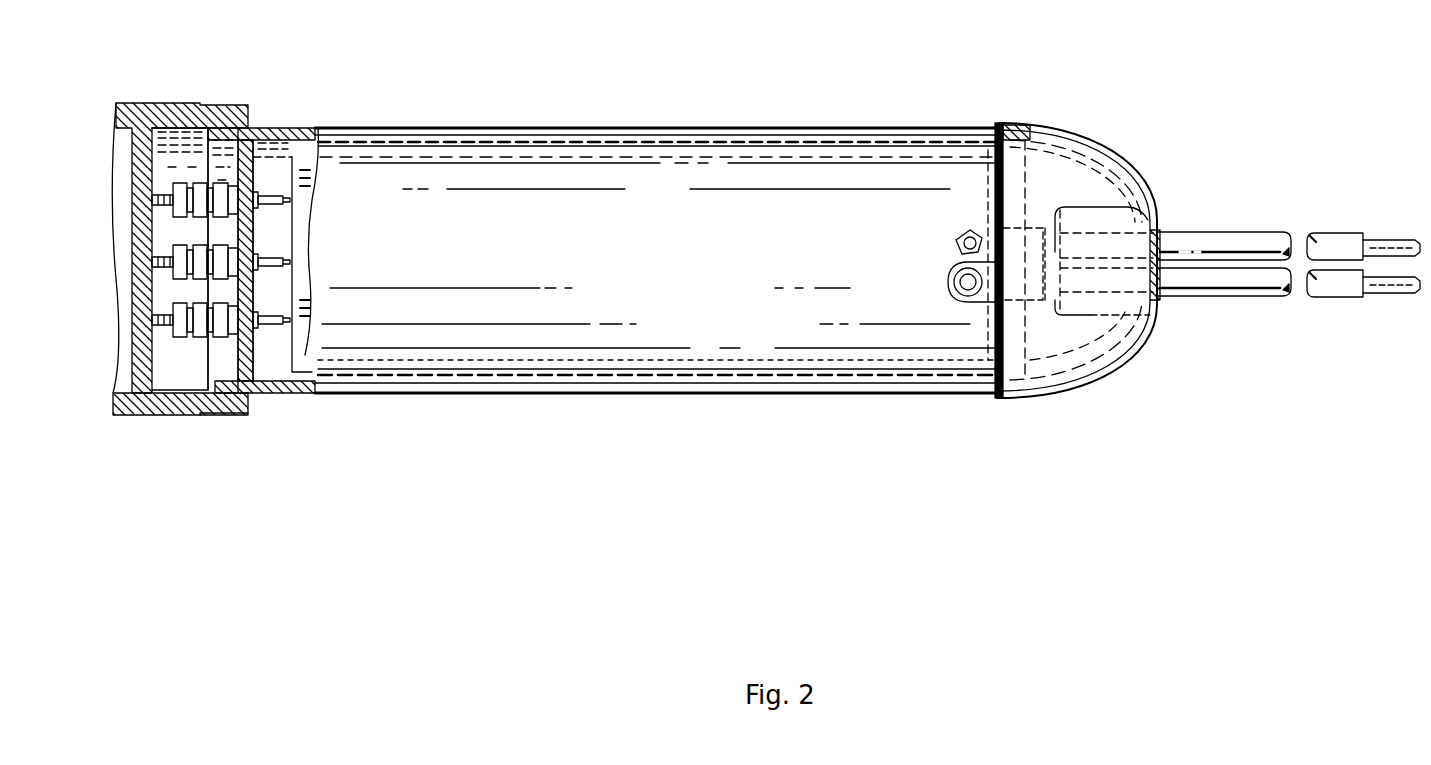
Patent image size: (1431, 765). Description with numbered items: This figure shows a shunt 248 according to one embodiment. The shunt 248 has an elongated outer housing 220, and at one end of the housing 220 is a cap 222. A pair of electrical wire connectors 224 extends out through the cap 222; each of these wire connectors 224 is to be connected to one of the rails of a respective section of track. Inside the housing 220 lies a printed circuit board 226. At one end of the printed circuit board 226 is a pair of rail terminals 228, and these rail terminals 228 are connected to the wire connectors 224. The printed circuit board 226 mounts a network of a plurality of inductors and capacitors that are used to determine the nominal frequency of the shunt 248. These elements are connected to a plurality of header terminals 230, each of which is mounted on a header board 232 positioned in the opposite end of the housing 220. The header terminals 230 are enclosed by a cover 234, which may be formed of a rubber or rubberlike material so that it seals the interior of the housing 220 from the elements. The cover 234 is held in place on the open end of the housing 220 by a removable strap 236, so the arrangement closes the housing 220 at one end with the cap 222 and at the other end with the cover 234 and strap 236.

The outer housing 220 is at (630, 128).
The cap 222 is at (1104, 150).
The electrical wire connectors 224 is at (1222, 257).
The printed circuit board 226 is at (305, 255).
The rail terminals 228 is at (952, 280).
The header terminals 230 is at (175, 303).
The header board 232 is at (278, 398).
The cover 234 is at (172, 103).
The removable strap 236 is at (217, 413).
The shunt 248 is at (785, 80).